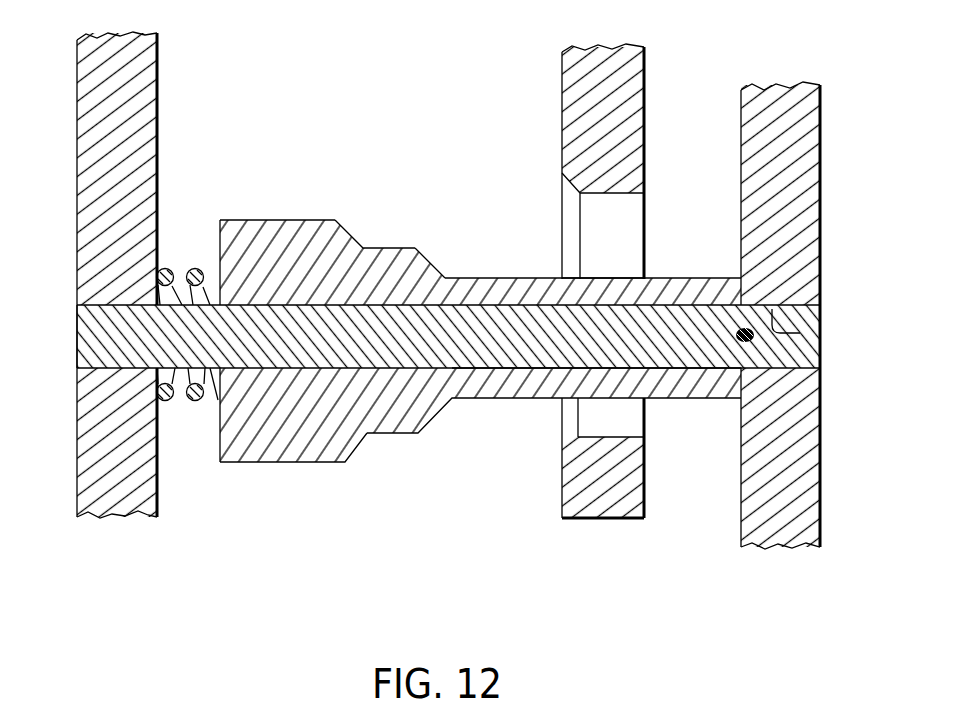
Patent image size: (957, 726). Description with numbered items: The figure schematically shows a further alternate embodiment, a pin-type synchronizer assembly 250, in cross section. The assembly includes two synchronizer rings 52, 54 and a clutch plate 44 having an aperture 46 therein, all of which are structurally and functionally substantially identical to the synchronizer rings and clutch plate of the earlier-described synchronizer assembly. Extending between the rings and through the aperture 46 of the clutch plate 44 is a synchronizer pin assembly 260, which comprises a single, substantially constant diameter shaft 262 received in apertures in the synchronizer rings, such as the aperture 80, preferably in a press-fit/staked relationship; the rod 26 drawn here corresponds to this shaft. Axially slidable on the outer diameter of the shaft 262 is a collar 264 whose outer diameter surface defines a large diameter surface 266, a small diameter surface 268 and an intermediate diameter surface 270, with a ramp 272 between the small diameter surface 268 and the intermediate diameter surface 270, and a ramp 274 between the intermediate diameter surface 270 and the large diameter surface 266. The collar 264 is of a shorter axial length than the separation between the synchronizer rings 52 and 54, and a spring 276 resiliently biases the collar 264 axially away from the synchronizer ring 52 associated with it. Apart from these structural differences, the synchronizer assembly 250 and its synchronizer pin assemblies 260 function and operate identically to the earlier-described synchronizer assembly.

The rod 26 is at (78, 320).
The clutch plate 44 is at (623, 88).
The aperture 46 is at (615, 194).
The synchronizer ring 52 is at (135, 80).
The synchronizer ring 54 is at (803, 108).
The aperture 80 is at (790, 333).
The pin-type synchronizer assembly 250 is at (403, 142).
The synchronizer pin assembly 260 is at (472, 463).
The shaft 262 is at (513, 347).
The collar 264 is at (397, 278).
The large diameter surface 266 is at (267, 222).
The small diameter surface 268 is at (615, 280).
The intermediate diameter surface 270 is at (392, 250).
The ramp 272 is at (432, 265).
The ramp 274 is at (350, 448).
The spring 276 is at (186, 403).